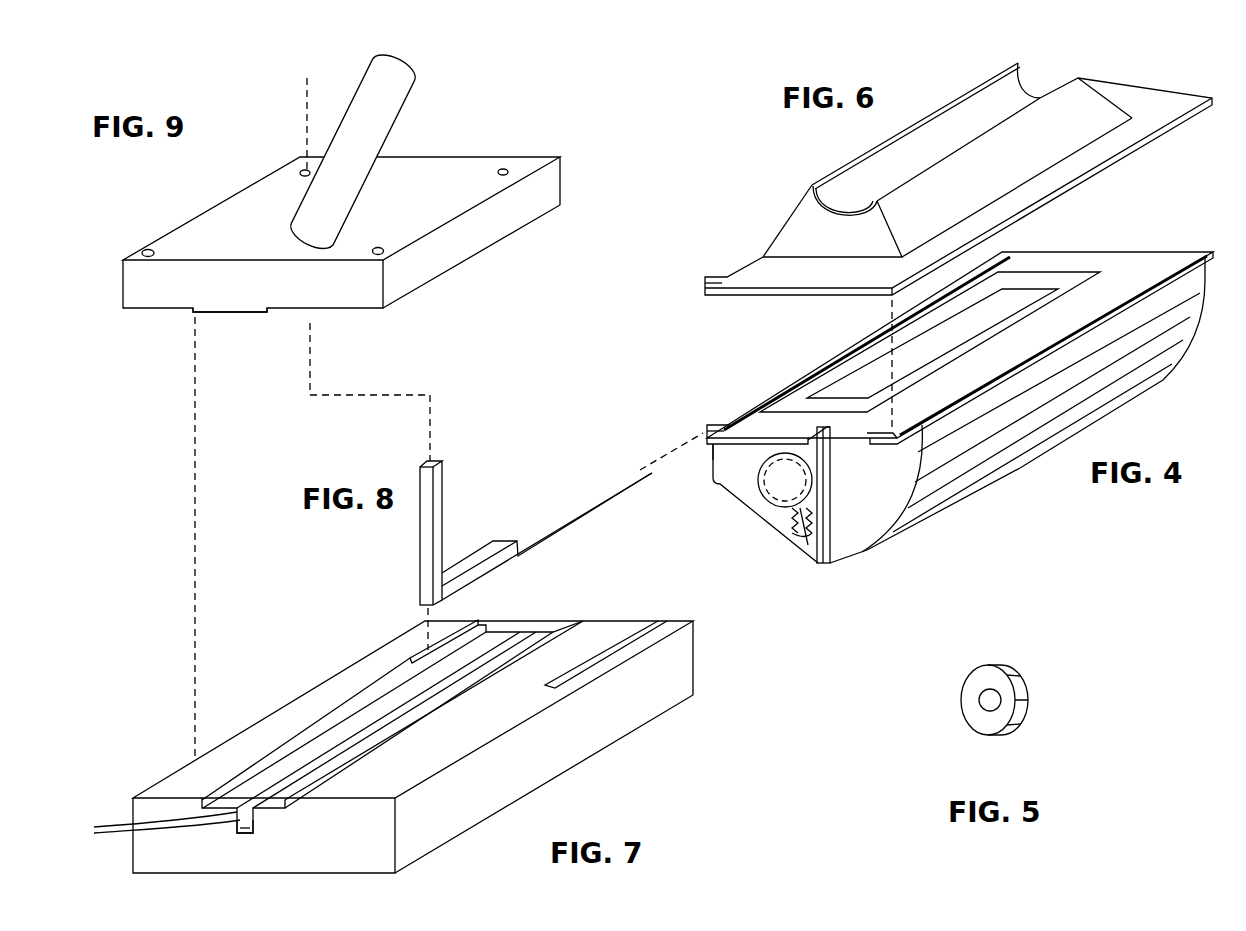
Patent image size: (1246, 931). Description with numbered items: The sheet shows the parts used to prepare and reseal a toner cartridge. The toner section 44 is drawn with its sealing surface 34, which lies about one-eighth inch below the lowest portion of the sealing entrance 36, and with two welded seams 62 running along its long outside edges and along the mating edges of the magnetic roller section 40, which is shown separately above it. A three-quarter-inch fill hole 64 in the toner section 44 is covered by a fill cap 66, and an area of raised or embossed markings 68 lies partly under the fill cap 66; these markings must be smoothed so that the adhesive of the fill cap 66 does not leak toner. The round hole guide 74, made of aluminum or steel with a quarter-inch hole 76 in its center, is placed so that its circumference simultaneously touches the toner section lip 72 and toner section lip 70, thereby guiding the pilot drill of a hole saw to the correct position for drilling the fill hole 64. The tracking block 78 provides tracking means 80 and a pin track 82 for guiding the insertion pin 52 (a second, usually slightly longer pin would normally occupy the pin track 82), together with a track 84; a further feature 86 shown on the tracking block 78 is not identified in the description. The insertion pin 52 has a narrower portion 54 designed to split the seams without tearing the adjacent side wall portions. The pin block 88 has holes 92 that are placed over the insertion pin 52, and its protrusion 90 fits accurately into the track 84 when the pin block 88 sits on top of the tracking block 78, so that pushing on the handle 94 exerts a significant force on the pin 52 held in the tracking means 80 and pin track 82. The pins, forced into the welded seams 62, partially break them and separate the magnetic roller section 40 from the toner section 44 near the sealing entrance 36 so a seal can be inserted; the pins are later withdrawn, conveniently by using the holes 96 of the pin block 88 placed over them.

In FIG. 4, the sealing surface 34 is at (998, 344).
In FIG. 4, the sealing entrance 36 is at (935, 311).
In FIG. 6, the magnetic roller section 40 is at (1097, 80).
In FIG. 4, the toner section 44 is at (955, 507).
In FIG. 8, the insertion pin 52 is at (418, 541).
In FIG. 8, the narrower portion 54 is at (547, 530).
In FIG. 4, the welded seams 62 is at (1010, 260).
In FIG. 4, the fill hole 64 is at (765, 525).
In FIG. 4, the fill cap 66 is at (752, 480).
In FIG. 4, the raised or embossed markings 68 is at (808, 548).
In FIG. 4, the toner section lip 70 is at (708, 440).
In FIG. 4, the toner section lip 72 is at (820, 567).
In FIG. 5, the hole guide 74 is at (1030, 683).
In FIG. 5, the hole 76 is at (988, 699).
In FIG. 7, the tracking block 78 is at (663, 718).
In FIG. 7, the tracking means 80 is at (410, 657).
In FIG. 7, the pin track 82 is at (660, 622).
In FIG. 7, the track 84 is at (148, 827).
In FIG. 7, the cable notch 86 is at (241, 834).
In FIG. 9, the pin block 88 is at (497, 247).
In FIG. 9, the protrusion 90 is at (218, 315).
In FIG. 9, the holes 92 is at (305, 168).
In FIG. 9, the handle 94 is at (378, 122).
In FIG. 9, the holes 96 is at (148, 250).